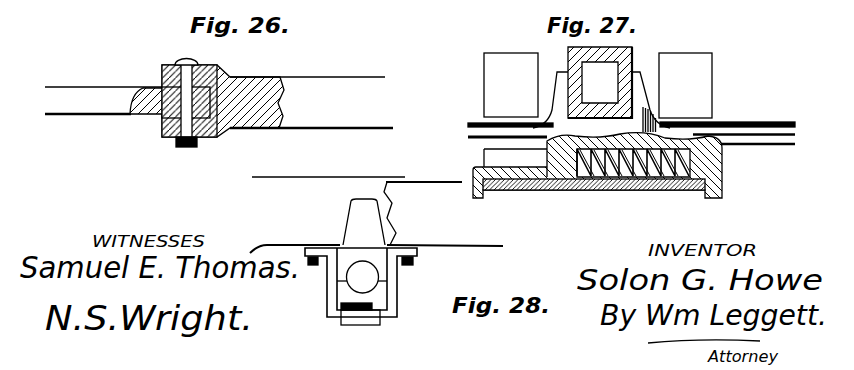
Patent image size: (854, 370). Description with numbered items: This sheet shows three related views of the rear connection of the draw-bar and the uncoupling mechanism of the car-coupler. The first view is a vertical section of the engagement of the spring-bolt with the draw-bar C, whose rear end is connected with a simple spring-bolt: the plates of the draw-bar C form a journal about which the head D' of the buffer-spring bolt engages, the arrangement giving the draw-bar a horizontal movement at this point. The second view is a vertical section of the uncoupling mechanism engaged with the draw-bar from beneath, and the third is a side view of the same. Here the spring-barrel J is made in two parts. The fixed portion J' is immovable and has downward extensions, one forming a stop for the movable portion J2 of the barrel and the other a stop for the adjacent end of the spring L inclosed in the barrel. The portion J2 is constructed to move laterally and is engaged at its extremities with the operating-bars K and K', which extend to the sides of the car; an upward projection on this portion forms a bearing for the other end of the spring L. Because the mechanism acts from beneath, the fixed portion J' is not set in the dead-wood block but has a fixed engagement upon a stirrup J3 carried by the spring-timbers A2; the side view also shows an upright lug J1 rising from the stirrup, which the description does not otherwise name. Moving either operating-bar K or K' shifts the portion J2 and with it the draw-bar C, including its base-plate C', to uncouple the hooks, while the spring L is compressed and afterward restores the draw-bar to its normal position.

In FIG. 26, the head of the buffer-spring bolt D' is at (103, 91).
In FIG. 26, the draw-bar C is at (261, 101).
In FIG. 27, the spring-timbers A2 is at (598, 85).
In FIG. 28, the spring-timbers A2 is at (376, 215).
In FIG. 27, the base-plate C' is at (608, 82).
In FIG. 27, the movable portion of the spring-barrel J2 is at (601, 103).
In FIG. 28, the movable portion of the spring-barrel J2 is at (360, 307).
In FIG. 27, the operating-bar K is at (499, 133).
In FIG. 27, the operating-bar K' is at (740, 133).
In FIG. 27, the fixed portion of the spring-barrel J' is at (597, 172).
In FIG. 27, the spring L is at (594, 180).
In FIG. 28, the upright lug J1 is at (364, 222).
In FIG. 28, the spring-barrel J is at (361, 282).
In FIG. 28, the stirrup J3 is at (343, 278).